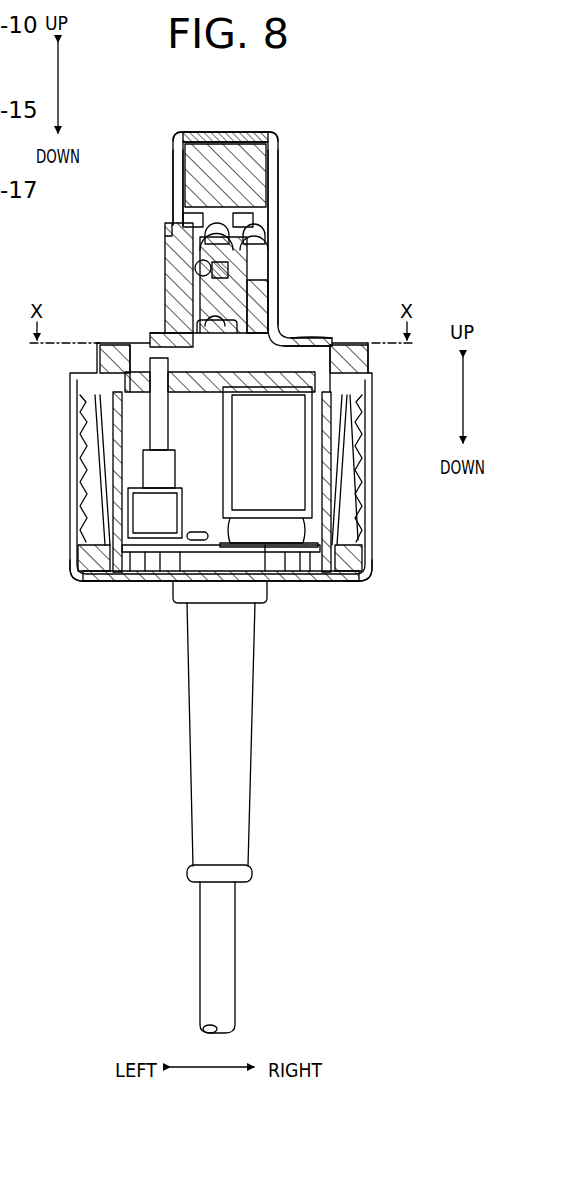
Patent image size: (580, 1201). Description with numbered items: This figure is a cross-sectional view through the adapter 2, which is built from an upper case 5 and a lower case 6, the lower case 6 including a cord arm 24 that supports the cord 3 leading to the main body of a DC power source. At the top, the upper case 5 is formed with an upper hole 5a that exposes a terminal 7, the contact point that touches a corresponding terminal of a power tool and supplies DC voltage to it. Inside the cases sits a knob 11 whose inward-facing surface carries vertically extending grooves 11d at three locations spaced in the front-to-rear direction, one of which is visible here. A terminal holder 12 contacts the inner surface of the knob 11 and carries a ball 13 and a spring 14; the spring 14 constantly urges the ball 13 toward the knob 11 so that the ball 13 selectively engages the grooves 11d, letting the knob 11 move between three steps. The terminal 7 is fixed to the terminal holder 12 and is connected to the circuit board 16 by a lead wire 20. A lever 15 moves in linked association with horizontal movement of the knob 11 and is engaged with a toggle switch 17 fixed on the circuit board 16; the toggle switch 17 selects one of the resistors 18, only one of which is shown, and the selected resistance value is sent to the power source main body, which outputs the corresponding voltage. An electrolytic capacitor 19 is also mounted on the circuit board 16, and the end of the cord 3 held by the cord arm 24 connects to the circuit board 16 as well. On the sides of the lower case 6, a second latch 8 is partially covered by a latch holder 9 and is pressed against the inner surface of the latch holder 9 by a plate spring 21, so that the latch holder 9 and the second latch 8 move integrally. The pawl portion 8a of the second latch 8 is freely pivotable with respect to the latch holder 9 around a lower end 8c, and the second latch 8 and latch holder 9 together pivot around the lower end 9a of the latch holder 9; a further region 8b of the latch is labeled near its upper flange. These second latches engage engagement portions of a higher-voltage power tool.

The adapter 2 is at (110, 305).
The cord 3 is at (236, 968).
The upper case 5 is at (213, 131).
The upper hole 5a is at (175, 134).
The lower case 6 is at (90, 583).
The terminal 7 is at (176, 165).
The second latch 8 is at (85, 455).
The pawl portion 8a is at (85, 495).
The housing upper flange 8b is at (100, 360).
The lower end 8c is at (365, 500).
The latch holder 9 is at (80, 548).
The lower end 9a is at (78, 582).
The knob 11 is at (166, 280).
The groove 11d is at (166, 236).
The terminal holder 12 is at (230, 270).
The ball 13 is at (262, 232).
The spring 14 is at (240, 330).
The lever 15 is at (322, 345).
The circuit board 16 is at (280, 548).
The toggle switch 17 is at (143, 545).
The resistor 18 is at (178, 550).
The electrolytic capacitor 19 is at (212, 266).
The lead wire 20 is at (212, 206).
The plate spring 21 is at (85, 410).
The cord arm 24 is at (255, 797).